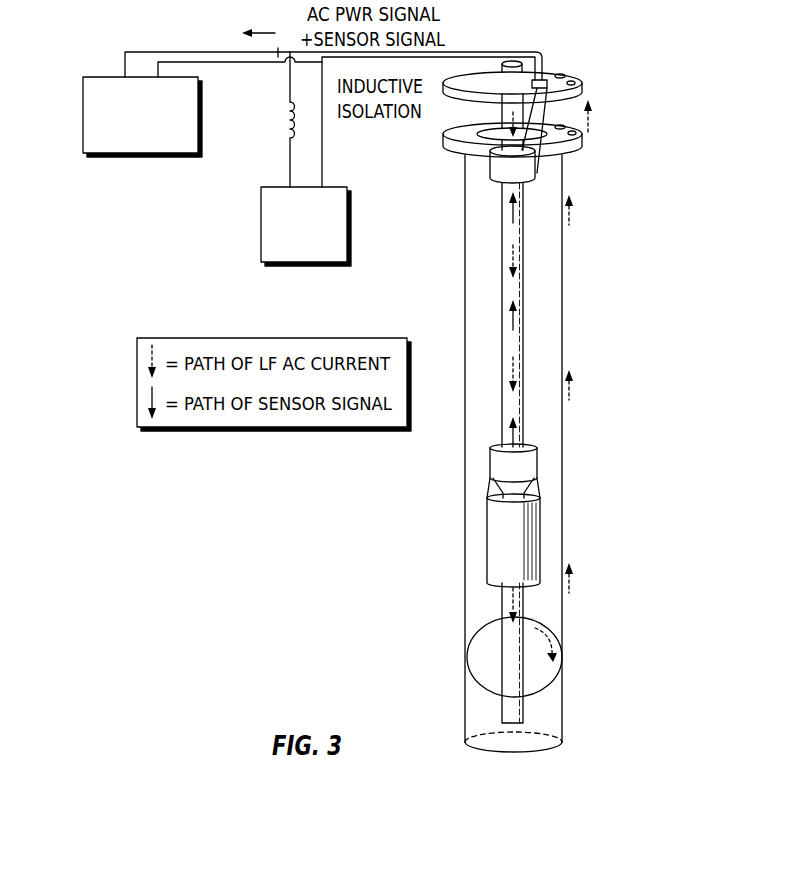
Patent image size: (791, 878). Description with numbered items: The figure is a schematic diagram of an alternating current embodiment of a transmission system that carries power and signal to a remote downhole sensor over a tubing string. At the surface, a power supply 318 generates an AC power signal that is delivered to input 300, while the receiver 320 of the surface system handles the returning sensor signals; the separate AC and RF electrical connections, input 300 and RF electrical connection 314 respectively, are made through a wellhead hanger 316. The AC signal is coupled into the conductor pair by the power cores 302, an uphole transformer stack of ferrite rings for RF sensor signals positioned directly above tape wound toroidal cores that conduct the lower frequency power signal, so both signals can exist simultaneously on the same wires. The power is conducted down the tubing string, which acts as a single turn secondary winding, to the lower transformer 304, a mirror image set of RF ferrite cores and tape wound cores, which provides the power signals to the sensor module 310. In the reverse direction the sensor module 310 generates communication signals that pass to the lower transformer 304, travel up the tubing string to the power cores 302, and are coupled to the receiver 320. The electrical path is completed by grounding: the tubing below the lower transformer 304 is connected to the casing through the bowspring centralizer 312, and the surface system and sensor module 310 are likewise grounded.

The input 300 is at (323, 165).
The power cores 302 is at (497, 176).
The lower transformer 304 is at (530, 468).
The sensor module 310 is at (498, 553).
The bowspring centralizer 312 is at (490, 618).
The RF electrical connection 314 is at (174, 52).
The wellhead hanger 316 is at (583, 96).
The power supply 318 is at (276, 187).
The receiver 320 is at (93, 77).